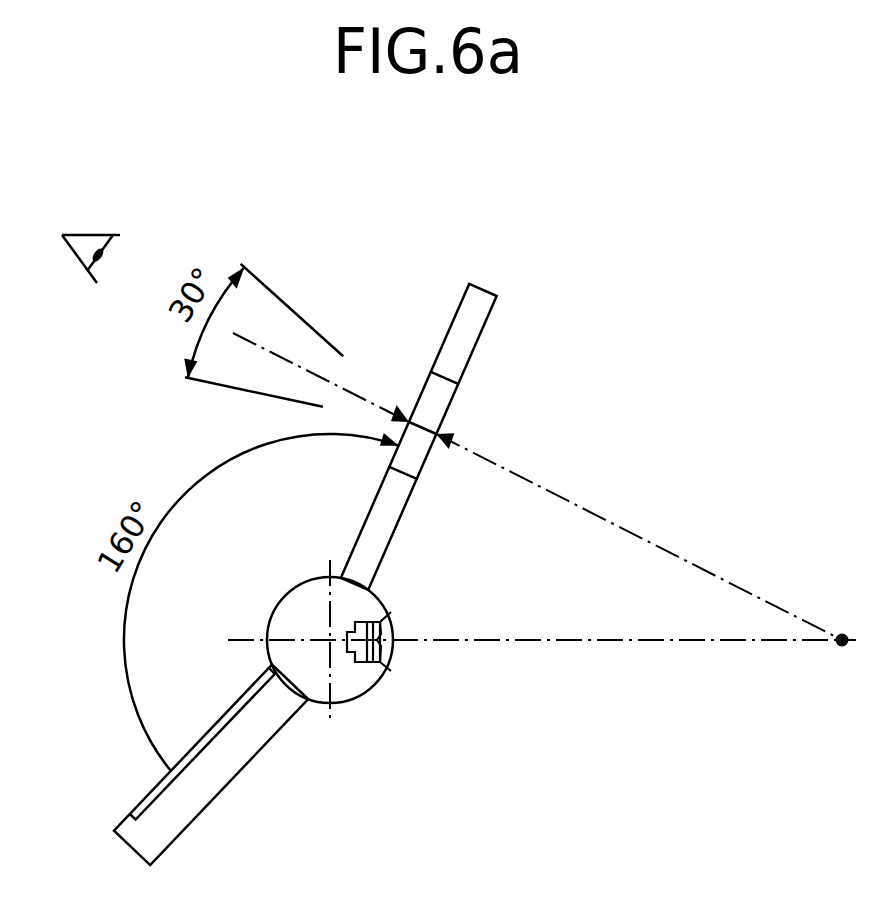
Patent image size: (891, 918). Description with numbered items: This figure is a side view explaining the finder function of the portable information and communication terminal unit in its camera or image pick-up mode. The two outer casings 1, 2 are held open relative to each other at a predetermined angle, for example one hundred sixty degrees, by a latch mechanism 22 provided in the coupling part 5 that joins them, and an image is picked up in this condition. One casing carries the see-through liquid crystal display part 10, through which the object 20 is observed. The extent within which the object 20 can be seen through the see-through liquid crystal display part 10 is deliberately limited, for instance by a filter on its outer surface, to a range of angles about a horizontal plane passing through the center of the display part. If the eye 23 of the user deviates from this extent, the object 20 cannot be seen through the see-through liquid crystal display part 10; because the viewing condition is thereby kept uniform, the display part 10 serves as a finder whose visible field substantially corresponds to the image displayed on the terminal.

The outer casing 1 is at (480, 335).
The outer casing 2 is at (237, 776).
The coupling part 5 is at (360, 605).
The see-through liquid crystal display part 10 is at (412, 450).
The object 20 is at (842, 648).
The latch mechanism 22 is at (355, 662).
The eye 23 is at (90, 232).